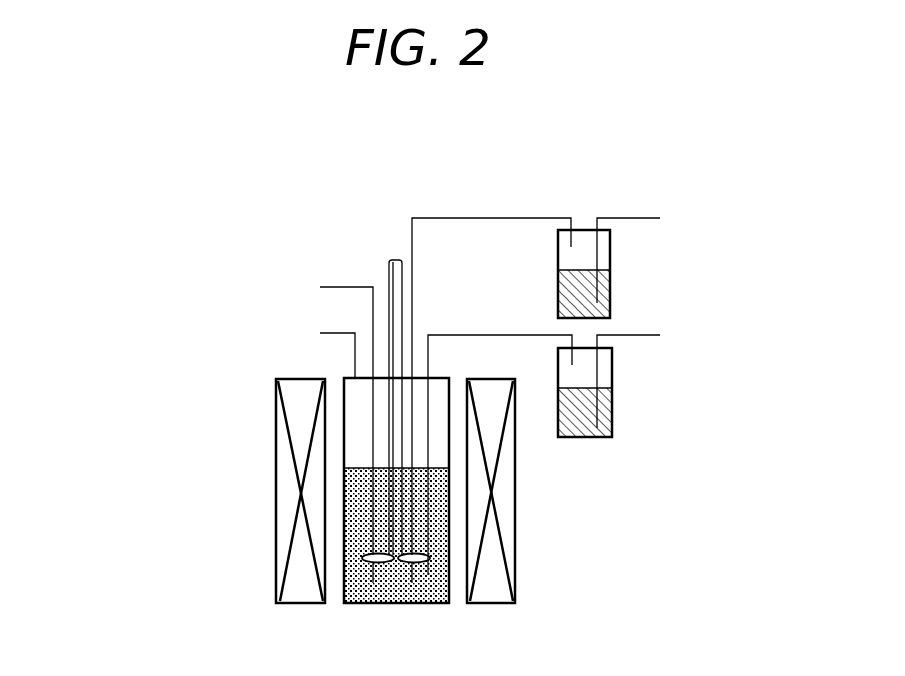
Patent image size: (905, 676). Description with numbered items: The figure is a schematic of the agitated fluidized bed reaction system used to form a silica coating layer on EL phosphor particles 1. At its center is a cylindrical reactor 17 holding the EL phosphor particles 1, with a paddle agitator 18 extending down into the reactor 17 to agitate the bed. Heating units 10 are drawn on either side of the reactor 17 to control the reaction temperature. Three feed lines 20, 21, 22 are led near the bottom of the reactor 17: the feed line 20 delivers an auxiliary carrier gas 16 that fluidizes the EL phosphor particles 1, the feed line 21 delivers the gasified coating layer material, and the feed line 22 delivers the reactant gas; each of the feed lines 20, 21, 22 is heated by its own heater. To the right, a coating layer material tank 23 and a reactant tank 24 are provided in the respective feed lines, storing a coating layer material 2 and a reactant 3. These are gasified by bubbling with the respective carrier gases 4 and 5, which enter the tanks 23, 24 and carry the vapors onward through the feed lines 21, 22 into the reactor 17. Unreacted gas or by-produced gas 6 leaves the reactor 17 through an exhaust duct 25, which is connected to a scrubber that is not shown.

The EL phosphor particles 1 is at (363, 487).
The coating layer material 2 is at (612, 413).
The reactant 3 is at (612, 293).
The carrier gas 4 is at (675, 335).
The carrier gas 5 is at (675, 218).
The unreacted gas or by-produced gas 6 is at (303, 333).
The heater 10 is at (303, 572).
The auxiliary carrier gas 16 is at (300, 287).
The cylindrical reactor 17 is at (345, 538).
The paddle agitator 18 is at (388, 262).
The feed line 20 is at (343, 286).
The feed line 21 is at (461, 334).
The feed line 22 is at (497, 217).
The coating layer material tank 23 is at (613, 367).
The reactant tank 24 is at (612, 245).
The exhaust duct 25 is at (355, 352).